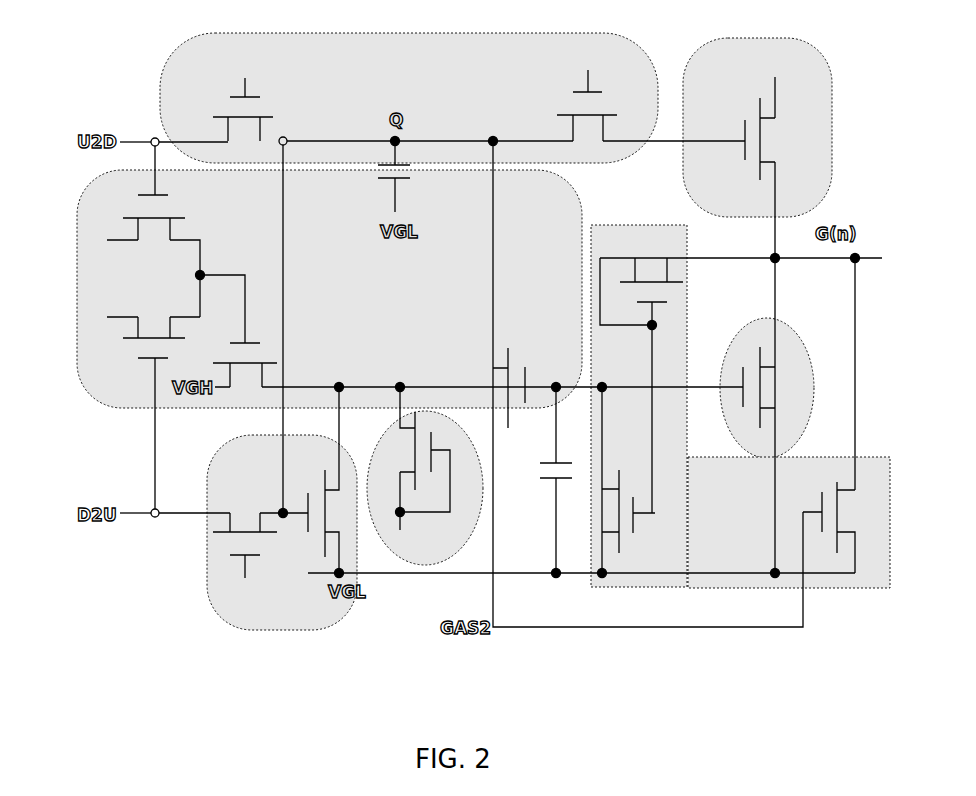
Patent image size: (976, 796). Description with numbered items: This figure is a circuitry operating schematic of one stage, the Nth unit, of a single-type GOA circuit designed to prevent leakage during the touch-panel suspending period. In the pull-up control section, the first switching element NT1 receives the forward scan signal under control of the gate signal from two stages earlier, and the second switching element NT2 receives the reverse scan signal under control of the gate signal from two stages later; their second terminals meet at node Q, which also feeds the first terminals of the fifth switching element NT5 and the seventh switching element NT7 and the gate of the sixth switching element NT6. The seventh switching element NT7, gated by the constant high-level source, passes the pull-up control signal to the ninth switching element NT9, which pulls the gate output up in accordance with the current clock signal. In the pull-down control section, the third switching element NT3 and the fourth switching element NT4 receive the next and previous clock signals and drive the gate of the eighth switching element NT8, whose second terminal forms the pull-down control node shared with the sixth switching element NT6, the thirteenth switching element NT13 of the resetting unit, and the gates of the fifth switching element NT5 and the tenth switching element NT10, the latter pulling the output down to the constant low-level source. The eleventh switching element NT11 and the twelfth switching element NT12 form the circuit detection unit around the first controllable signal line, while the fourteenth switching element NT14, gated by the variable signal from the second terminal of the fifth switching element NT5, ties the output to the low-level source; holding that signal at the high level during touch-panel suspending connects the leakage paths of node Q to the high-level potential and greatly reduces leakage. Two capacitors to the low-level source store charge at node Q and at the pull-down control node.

The first switching element NT1 is at (244, 116).
The second switching element NT2 is at (248, 543).
The third switching element NT3 is at (144, 280).
The fourth switching element NT4 is at (115, 326).
The fifth switching element NT5 is at (520, 375).
The sixth switching element NT6 is at (316, 480).
The seventh switching element NT7 is at (651, 109).
The eighth switching element NT8 is at (245, 388).
The ninth switching element NT9 is at (764, 130).
The tenth switching element NT10 is at (741, 399).
The eleventh switching element NT11 is at (641, 371).
The twelfth switching element NT12 is at (656, 480).
The thirteenth switching element NT13 is at (434, 475).
The fourteenth switching element NT14 is at (824, 518).